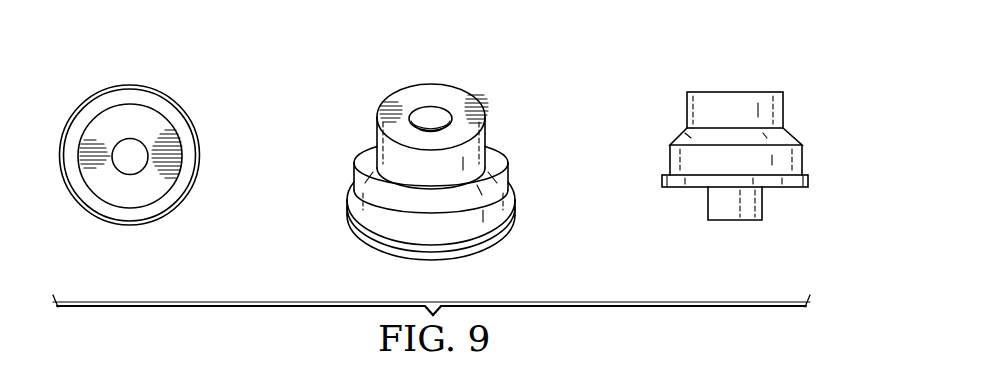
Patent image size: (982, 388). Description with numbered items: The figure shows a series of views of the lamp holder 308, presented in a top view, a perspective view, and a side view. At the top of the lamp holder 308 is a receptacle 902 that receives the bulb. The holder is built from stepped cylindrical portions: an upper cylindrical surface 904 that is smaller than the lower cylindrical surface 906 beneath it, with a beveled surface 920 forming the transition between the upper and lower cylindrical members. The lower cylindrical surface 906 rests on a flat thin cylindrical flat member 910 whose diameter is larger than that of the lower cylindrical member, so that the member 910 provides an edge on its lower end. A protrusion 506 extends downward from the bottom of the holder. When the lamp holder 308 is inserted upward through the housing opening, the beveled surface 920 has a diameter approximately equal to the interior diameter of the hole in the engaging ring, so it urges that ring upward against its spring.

The lamp holder 308 is at (100, 60).
The receptacle 902 is at (441, 107).
The beveled surface 920 is at (498, 148).
The lower cylindrical surface 906 is at (380, 214).
The cylindrical flat member 910 is at (512, 237).
The upper cylindrical surface 904 is at (785, 110).
The protrusion 506 is at (763, 200).